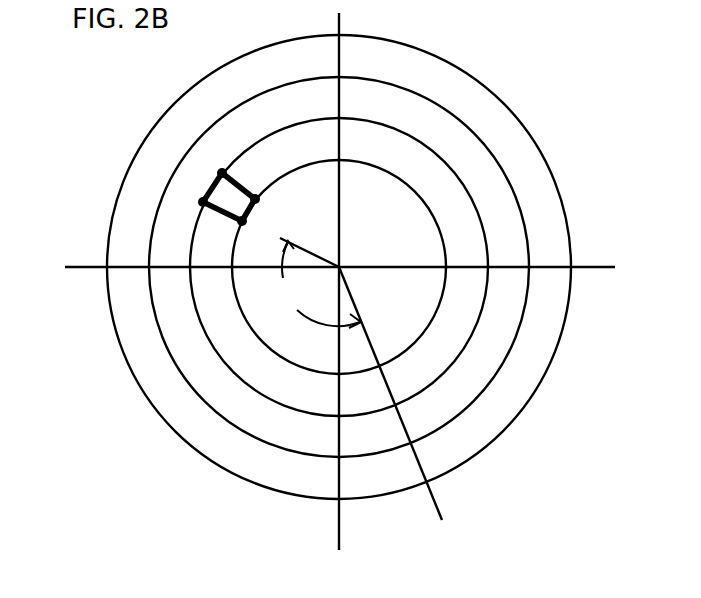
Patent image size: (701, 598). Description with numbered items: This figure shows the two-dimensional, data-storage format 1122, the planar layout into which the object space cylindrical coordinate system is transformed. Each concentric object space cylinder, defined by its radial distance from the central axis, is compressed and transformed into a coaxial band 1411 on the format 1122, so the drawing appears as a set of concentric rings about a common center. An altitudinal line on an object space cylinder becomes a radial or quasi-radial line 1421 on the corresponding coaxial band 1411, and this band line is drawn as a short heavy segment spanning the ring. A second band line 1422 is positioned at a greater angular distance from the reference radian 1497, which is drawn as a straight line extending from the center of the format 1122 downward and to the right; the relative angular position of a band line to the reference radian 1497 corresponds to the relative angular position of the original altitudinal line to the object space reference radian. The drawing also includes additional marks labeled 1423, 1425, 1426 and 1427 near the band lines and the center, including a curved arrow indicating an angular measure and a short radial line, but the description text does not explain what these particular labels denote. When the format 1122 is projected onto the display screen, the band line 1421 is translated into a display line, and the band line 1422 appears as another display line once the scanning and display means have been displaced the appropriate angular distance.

The two-dimensional, data-storage format 1122 is at (558, 163).
The coaxial band 1411 is at (497, 230).
The radial or quasi-radial line 1421 is at (215, 223).
The band line 1422 is at (193, 193).
The inner circle 1423 is at (232, 232).
The zone boundary arc 1425 is at (210, 160).
The angle 1426 is at (309, 284).
The radial reference line 1427 is at (305, 234).
The angular reference radian 1497 is at (417, 393).